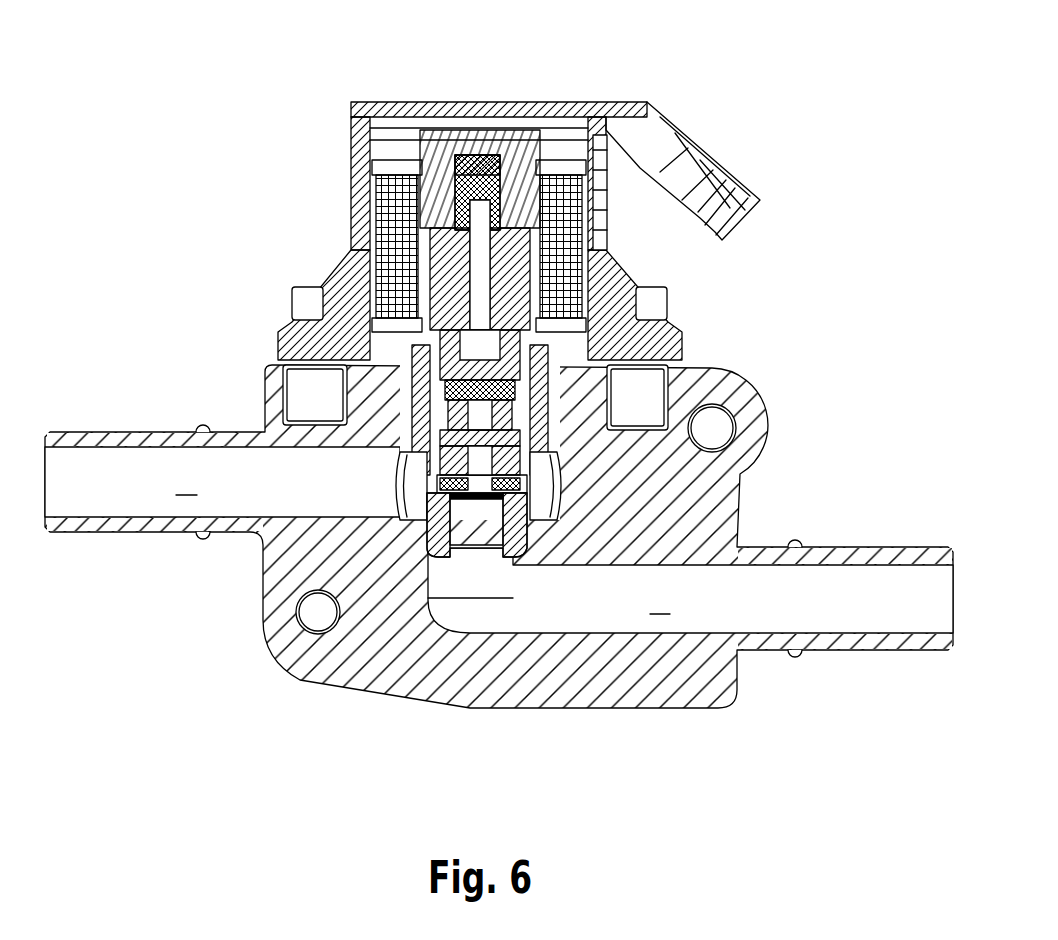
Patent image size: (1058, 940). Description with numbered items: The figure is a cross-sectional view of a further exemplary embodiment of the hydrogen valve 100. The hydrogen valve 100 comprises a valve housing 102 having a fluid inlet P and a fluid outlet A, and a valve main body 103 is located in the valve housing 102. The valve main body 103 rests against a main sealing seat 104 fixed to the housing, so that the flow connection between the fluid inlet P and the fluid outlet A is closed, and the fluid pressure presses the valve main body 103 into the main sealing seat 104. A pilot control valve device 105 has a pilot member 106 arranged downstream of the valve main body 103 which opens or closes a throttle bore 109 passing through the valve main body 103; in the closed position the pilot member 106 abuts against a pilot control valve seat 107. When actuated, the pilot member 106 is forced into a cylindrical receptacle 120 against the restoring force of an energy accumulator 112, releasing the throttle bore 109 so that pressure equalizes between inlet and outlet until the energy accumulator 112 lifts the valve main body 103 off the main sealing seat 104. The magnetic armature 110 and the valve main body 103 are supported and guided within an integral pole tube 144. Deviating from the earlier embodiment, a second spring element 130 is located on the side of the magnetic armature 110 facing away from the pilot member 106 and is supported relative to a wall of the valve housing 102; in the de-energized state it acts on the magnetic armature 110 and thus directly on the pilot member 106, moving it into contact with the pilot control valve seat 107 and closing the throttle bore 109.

The hydrogen valve 100 is at (800, 290).
The valve housing 102 is at (351, 213).
The valve main body 103 is at (417, 440).
The main sealing seat 104 is at (530, 543).
The pilot control valve device 105 is at (457, 382).
The pilot member 106 is at (500, 415).
The pilot control valve seat 107 is at (490, 437).
The throttle bore 109 is at (463, 467).
The magnetic armature 110 is at (517, 255).
The energy accumulator 112 is at (500, 378).
The cylindrical receptacle 120 is at (497, 400).
The second spring element 130 is at (493, 177).
The pole tube 144 is at (525, 363).